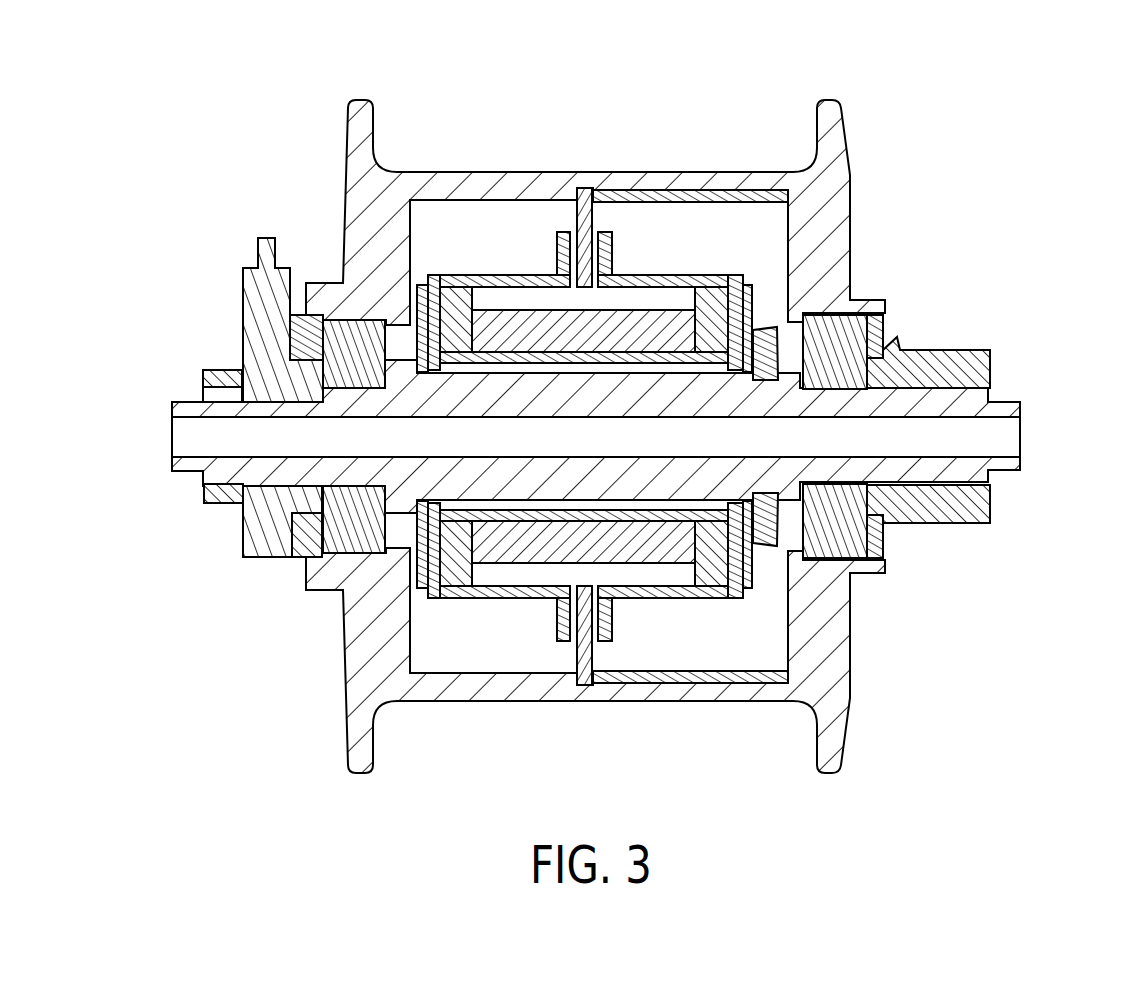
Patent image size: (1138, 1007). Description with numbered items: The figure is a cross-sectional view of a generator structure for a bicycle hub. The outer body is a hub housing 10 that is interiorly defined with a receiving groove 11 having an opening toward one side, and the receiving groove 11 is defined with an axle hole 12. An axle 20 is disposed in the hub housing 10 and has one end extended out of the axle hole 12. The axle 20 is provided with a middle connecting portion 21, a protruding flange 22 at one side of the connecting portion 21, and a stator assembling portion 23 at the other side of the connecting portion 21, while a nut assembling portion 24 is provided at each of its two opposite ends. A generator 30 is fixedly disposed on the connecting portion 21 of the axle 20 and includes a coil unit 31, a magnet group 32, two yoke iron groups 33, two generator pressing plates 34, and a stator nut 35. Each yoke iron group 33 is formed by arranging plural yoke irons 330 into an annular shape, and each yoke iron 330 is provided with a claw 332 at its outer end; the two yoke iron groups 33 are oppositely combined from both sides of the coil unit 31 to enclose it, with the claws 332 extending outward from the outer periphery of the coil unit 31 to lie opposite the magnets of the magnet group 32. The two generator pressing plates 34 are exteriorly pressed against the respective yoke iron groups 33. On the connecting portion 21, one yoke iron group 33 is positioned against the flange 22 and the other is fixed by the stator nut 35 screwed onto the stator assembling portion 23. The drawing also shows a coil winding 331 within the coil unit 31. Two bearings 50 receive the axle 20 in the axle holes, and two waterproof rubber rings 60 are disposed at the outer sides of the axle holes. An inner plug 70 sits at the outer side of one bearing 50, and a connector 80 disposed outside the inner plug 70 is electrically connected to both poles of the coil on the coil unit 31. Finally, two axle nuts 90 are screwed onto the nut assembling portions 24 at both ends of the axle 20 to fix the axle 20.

The hub housing 10 is at (703, 701).
The receiving groove 11 is at (455, 633).
The axle hole 12 is at (347, 565).
The axle 20 is at (1003, 475).
The connecting portion 21 is at (650, 500).
The protruding flange 22 is at (393, 477).
The stator assembling portion 23 is at (790, 432).
The nut assembling portion 24 is at (927, 387).
The generator 30 is at (792, 70).
The coil unit 31 is at (618, 342).
The magnet group 32 is at (590, 205).
The yoke iron group 33 is at (515, 282).
The yoke iron 330 is at (433, 550).
The coil 331 is at (478, 503).
The claw 332 is at (558, 628).
The generator pressing plate 34 is at (420, 300).
The stator nut 35 is at (767, 330).
The bearing 50 is at (352, 330).
The waterproof rubber ring 60 is at (303, 532).
The inner plug 70 is at (288, 393).
The connector 80 is at (263, 300).
The axle nut 90 is at (222, 505).